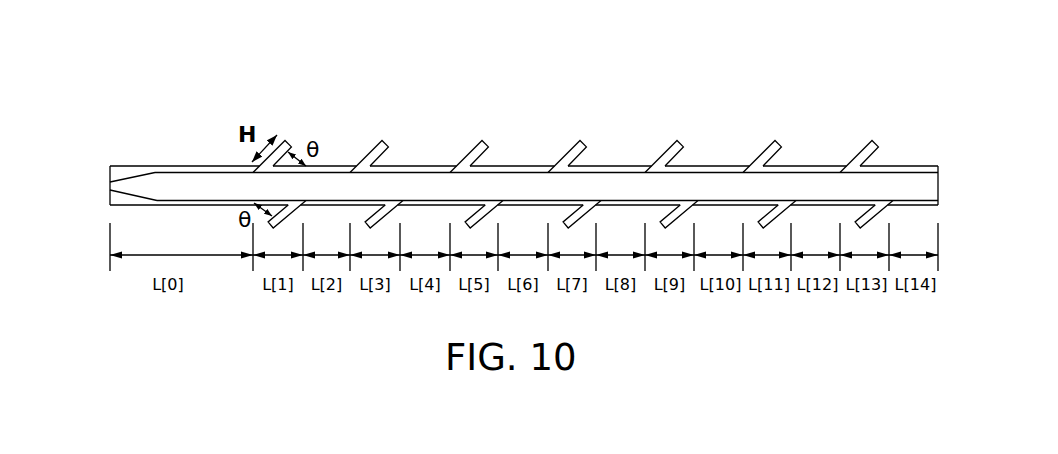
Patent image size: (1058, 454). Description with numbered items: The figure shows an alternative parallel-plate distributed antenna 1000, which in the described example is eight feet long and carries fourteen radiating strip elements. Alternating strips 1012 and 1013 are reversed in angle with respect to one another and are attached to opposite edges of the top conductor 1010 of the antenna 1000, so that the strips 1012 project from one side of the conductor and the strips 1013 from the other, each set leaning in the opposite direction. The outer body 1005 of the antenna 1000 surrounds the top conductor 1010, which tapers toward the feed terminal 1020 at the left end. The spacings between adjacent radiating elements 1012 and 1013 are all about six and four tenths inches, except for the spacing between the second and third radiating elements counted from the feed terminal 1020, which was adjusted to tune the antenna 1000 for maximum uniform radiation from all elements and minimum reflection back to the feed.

The distributed antenna 1000 is at (208, 73).
The outer tube wall 1005 is at (131, 168).
The top conductor 1010 is at (213, 184).
The radiating strip 1012 is at (467, 220).
The radiating strip 1013 is at (482, 148).
The feed terminal 1020 is at (110, 182).